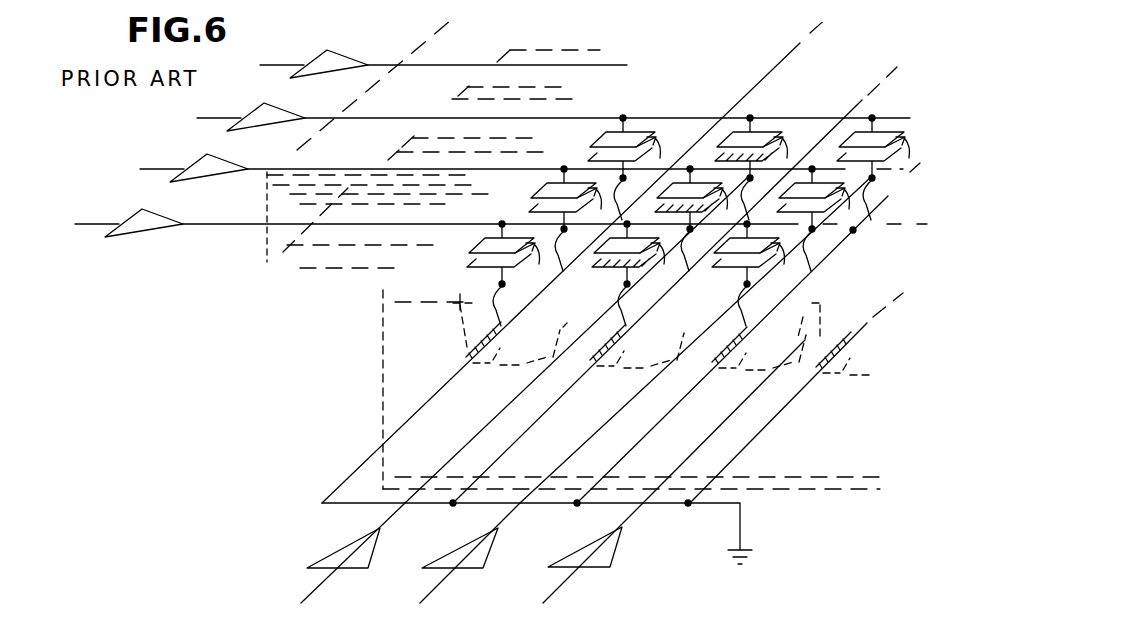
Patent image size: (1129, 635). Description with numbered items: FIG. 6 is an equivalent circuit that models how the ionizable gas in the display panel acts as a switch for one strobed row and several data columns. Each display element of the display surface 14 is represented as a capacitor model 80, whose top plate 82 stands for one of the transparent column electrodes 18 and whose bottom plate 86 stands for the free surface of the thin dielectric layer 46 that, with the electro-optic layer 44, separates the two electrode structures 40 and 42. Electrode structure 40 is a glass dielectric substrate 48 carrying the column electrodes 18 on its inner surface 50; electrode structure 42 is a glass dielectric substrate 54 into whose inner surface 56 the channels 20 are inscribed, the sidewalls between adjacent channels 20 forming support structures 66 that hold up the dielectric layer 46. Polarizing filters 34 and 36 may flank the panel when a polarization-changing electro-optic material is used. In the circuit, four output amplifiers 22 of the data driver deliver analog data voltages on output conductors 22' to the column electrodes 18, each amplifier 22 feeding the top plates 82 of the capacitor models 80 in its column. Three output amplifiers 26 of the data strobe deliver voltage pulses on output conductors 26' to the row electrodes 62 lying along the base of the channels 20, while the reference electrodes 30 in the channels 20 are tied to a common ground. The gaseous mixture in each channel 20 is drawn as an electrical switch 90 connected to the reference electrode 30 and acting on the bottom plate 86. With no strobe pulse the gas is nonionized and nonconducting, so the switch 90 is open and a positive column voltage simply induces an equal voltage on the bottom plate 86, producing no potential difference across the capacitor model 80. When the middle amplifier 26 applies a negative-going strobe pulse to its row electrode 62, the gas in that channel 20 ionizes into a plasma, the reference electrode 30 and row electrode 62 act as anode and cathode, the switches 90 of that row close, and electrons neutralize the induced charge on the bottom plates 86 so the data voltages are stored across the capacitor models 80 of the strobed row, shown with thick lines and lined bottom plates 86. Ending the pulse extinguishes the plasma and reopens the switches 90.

The display surface 14 is at (428, 40).
The column electrodes 18 is at (505, 56).
The channels 20 is at (497, 362).
The output amplifiers 22 is at (221, 143).
The output conductors 22' is at (266, 172).
The output amplifiers 26 is at (474, 564).
The output conductors 26' is at (472, 553).
The reference electrode 30 is at (467, 358).
The light polarizing filter 34 is at (412, 488).
The light polarizing filter 36 is at (267, 187).
The electrode structure 40 is at (258, 271).
The electrode structure 42 is at (371, 396).
The layer of electro-optic material 44 is at (383, 288).
The layer of dielectric material 46 is at (383, 302).
The glass dielectric substrate 48 is at (267, 213).
The inner surface 50 is at (268, 266).
The glass dielectric substrate 54 is at (383, 434).
The inner surface 56 is at (812, 312).
The row electrodes 62 is at (527, 361).
The support structures 66 is at (562, 331).
The capacitor model 80 is at (603, 140).
The top plate 82 is at (620, 126).
The bottom plate 86 is at (664, 141).
The electrical switch 90 is at (618, 176).